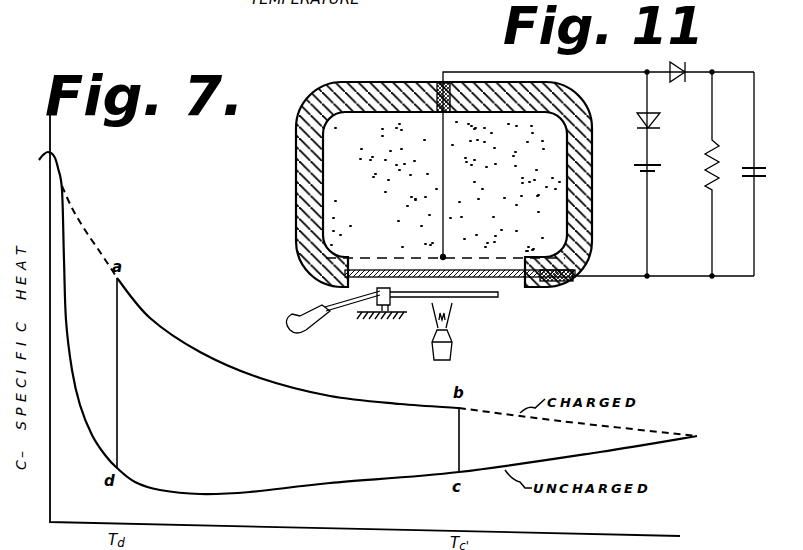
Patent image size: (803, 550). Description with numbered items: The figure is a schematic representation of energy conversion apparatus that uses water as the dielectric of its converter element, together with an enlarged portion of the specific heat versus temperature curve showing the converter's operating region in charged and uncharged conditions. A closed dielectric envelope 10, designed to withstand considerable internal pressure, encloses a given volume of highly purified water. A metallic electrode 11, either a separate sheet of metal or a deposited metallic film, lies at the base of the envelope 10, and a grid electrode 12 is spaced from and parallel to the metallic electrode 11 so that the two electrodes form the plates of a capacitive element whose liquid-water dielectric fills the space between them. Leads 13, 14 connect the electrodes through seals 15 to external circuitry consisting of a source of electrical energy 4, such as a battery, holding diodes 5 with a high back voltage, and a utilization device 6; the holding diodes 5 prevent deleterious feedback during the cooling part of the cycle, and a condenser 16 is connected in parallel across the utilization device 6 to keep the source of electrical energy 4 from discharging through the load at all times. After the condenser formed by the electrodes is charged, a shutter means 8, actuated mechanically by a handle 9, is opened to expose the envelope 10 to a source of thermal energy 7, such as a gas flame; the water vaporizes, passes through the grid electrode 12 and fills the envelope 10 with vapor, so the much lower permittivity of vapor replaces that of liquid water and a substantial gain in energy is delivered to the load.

The source of electrical energy 4 is at (658, 170).
The holding diode 5 is at (661, 118).
The utilization device 6 is at (713, 146).
The source of thermal energy 7 is at (453, 346).
The shutter means 8 is at (480, 300).
The handle 9 is at (292, 314).
The dielectric envelope 10 is at (296, 176).
The metallic electrode 11 is at (512, 280).
The grid electrode 12 is at (474, 265).
The lead 13 is at (470, 72).
The lead 14 is at (632, 280).
The seal 15 is at (443, 86).
The condenser 16 is at (766, 172).